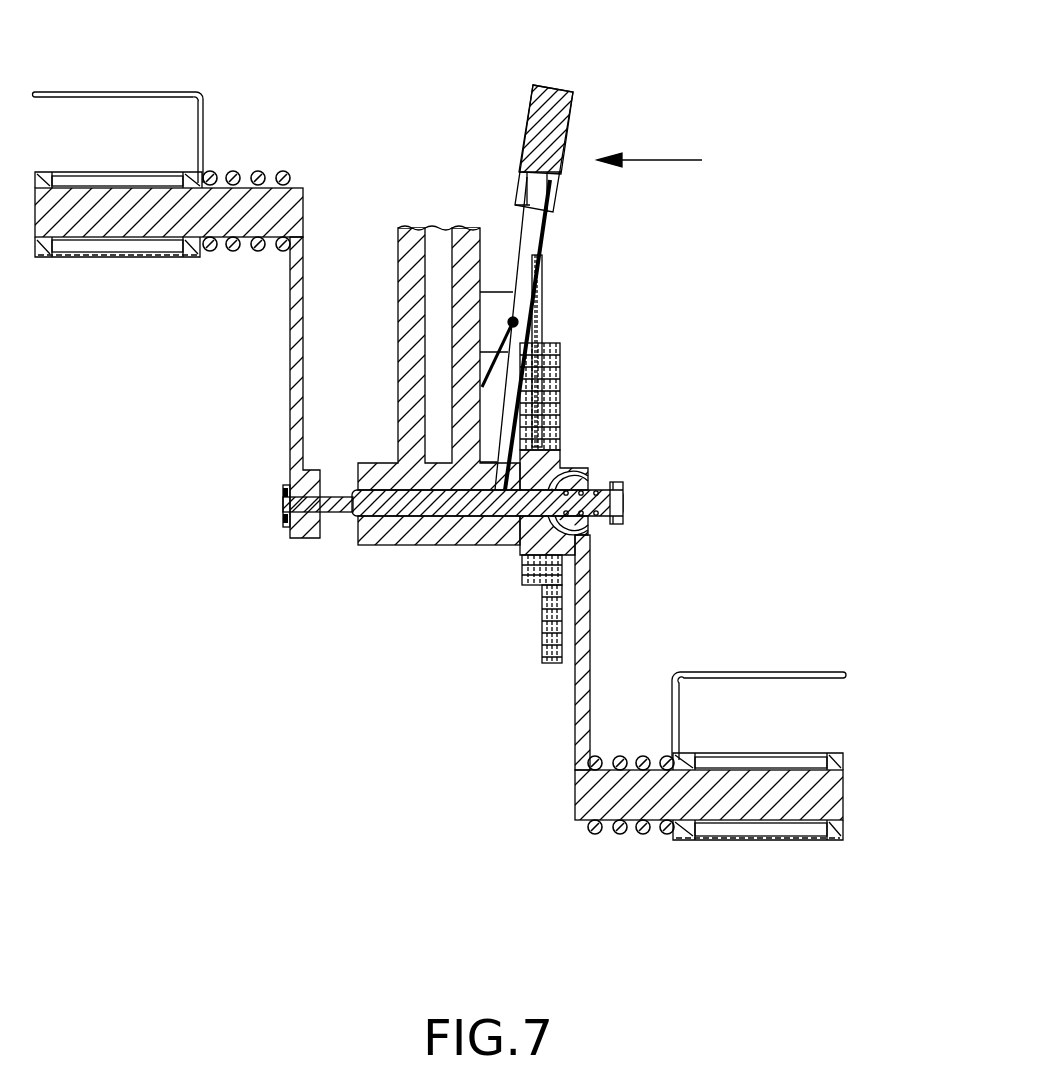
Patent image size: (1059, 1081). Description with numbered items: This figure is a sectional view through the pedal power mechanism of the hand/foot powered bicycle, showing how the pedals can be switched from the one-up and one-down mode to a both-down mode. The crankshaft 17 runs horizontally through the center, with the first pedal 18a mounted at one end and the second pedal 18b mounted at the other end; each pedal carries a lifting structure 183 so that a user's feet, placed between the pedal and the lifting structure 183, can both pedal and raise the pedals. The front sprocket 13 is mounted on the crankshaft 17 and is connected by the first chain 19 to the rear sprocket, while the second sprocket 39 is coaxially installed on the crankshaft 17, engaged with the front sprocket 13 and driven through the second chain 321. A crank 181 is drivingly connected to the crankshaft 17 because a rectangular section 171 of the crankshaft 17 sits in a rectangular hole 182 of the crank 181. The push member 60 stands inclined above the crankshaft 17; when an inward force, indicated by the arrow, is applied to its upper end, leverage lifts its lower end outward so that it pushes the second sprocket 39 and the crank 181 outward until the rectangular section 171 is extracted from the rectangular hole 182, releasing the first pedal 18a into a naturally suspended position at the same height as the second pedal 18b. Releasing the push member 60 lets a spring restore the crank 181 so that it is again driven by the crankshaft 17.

The push member 60 is at (585, 106).
The second chain 321 is at (541, 305).
The first chain 19 is at (560, 360).
The rectangular section 171 is at (593, 472).
The crankshaft 17 is at (346, 482).
The first pedal 18a is at (193, 257).
The rectangular hole 182 is at (524, 546).
The second sprocket 39 is at (530, 572).
The front sprocket 13 is at (555, 632).
The crank 181 is at (583, 592).
The lifting structure 183 is at (765, 675).
The second pedal 18b is at (688, 830).